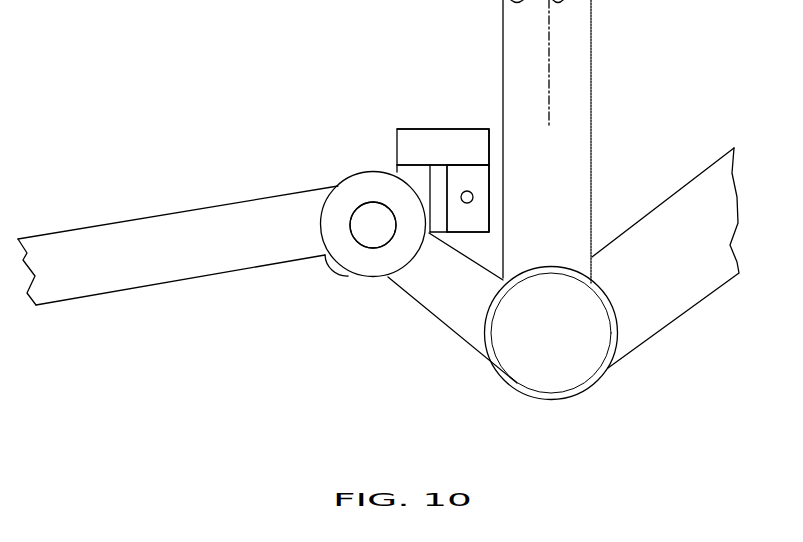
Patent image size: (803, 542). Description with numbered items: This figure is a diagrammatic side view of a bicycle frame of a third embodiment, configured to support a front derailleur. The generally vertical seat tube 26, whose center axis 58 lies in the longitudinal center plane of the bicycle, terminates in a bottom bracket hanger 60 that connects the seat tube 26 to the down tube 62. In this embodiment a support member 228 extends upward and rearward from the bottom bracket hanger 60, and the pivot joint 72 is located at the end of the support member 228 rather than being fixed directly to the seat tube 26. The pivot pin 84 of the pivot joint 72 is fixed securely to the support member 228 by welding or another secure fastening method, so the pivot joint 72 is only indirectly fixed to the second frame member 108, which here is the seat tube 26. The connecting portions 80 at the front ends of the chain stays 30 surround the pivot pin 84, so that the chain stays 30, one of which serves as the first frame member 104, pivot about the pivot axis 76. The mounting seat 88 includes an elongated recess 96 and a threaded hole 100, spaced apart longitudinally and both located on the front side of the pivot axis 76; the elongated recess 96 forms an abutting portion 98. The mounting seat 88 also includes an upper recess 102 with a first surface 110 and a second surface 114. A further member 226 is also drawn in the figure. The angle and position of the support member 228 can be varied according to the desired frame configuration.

The seat tube 26 is at (570, 17).
The chain stays 30 is at (132, 242).
The center axis 58 is at (548, 90).
The bottom bracket hanger 60 is at (552, 402).
The down tube 62 is at (630, 312).
The pivot joint 72 is at (303, 298).
The pivot axis 76 is at (373, 227).
The connecting portions 80 is at (363, 268).
The pivot pin 84 is at (368, 212).
The mounting seat 88 is at (490, 150).
The elongated recess 96 is at (443, 217).
The abutting portion 98 is at (440, 185).
The threaded hole 100 is at (473, 198).
The upper recess 102 is at (420, 133).
The first frame member 104 is at (247, 240).
The second frame member 108 is at (588, 160).
The first surface 110 is at (412, 163).
The second surface 114 is at (467, 140).
The strut 226 is at (692, 202).
The support member 228 is at (460, 322).